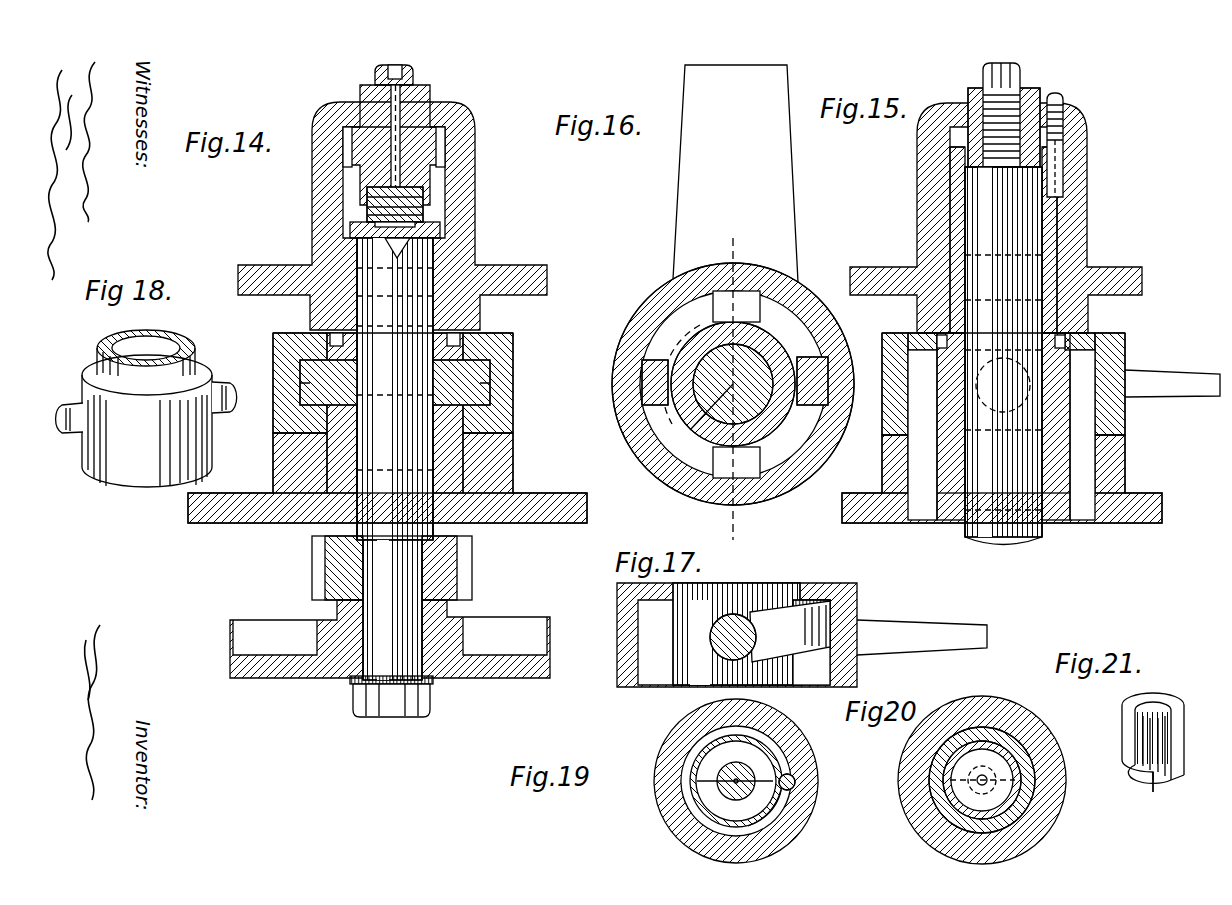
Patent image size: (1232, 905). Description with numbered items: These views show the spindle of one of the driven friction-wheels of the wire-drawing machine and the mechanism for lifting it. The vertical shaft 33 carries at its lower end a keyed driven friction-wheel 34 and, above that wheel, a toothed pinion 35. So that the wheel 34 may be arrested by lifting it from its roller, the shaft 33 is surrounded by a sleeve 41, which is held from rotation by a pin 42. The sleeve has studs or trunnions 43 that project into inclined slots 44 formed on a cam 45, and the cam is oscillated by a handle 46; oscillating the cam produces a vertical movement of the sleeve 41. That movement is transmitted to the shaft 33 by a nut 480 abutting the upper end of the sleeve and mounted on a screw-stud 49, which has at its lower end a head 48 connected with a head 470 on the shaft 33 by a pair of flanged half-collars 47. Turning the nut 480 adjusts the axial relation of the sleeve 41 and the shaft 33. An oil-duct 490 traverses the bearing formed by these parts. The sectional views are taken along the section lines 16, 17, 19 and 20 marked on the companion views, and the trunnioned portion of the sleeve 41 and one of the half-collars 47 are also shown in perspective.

In FIG. 14, the section line 16 16 is at (300, 383).
In FIG. 16, the section line 17 17 is at (731, 387).
In FIG. 15, the section line 19 19 is at (950, 168).
In FIG. 15, the section line 20 20 is at (950, 214).
In FIG. 14, the shaft 33 is at (410, 312).
In FIG. 16, the shaft 33 is at (668, 422).
In FIG. 14, the driven friction-wheel 34 is at (262, 640).
In FIG. 14, the toothed pinion 35 is at (325, 557).
In FIG. 14, the sleeve 41 is at (503, 441).
In FIG. 16, the sleeve 41 is at (692, 502).
In FIG. 15, the sleeve 41 is at (1100, 426).
In FIG. 18, the sleeve 41 is at (130, 470).
In FIG. 17, the sleeve 41 is at (736, 634).
In FIG. 19, the sleeve 41 is at (700, 746).
In FIG. 20, the sleeve 41 is at (990, 731).
In FIG. 15, the pin 42 is at (1088, 140).
In FIG. 19, the pin 42 is at (796, 791).
In FIG. 14, the stud or trunnion 43 is at (302, 375).
In FIG. 16, the stud or trunnion 43 is at (642, 366).
In FIG. 18, the stud or trunnion 43 is at (70, 426).
In FIG. 17, the stud or trunnion 43 is at (762, 596).
In FIG. 16, the inclined slot 44 is at (665, 333).
In FIG. 17, the inclined slot 44 is at (820, 600).
In FIG. 14, the cam 45 is at (513, 345).
In FIG. 16, the cam 45 is at (665, 306).
In FIG. 15, the cam 45 is at (1115, 356).
In FIG. 17, the cam 45 is at (858, 608).
In FIG. 14, the handle 46 is at (345, 196).
In FIG. 16, the handle 46 is at (690, 186).
In FIG. 15, the handle 46 is at (1195, 383).
In FIG. 17, the handle 46 is at (926, 630).
In FIG. 14, the flanged half-collar 47 is at (433, 201).
In FIG. 15, the flanged half-collar 47 is at (965, 236).
In FIG. 19, the flanged half-collar 47 is at (705, 771).
In FIG. 20, the flanged half-collar 47 is at (950, 773).
In FIG. 21, the flanged half-collar 47 is at (1127, 736).
In FIG. 15, the head 48 is at (1063, 186).
In FIG. 20, the head 48 is at (962, 801).
In FIG. 14, the screw-stud 49 is at (442, 118).
In FIG. 15, the screw-stud 49 is at (976, 103).
In FIG. 19, the screw-stud 49 is at (722, 789).
In FIG. 14, the head 470 is at (425, 224).
In FIG. 15, the head 470 is at (1070, 236).
In FIG. 14, the nut 480 is at (430, 104).
In FIG. 15, the nut 480 is at (1042, 100).
In FIG. 14, the oil-duct 490 is at (380, 76).